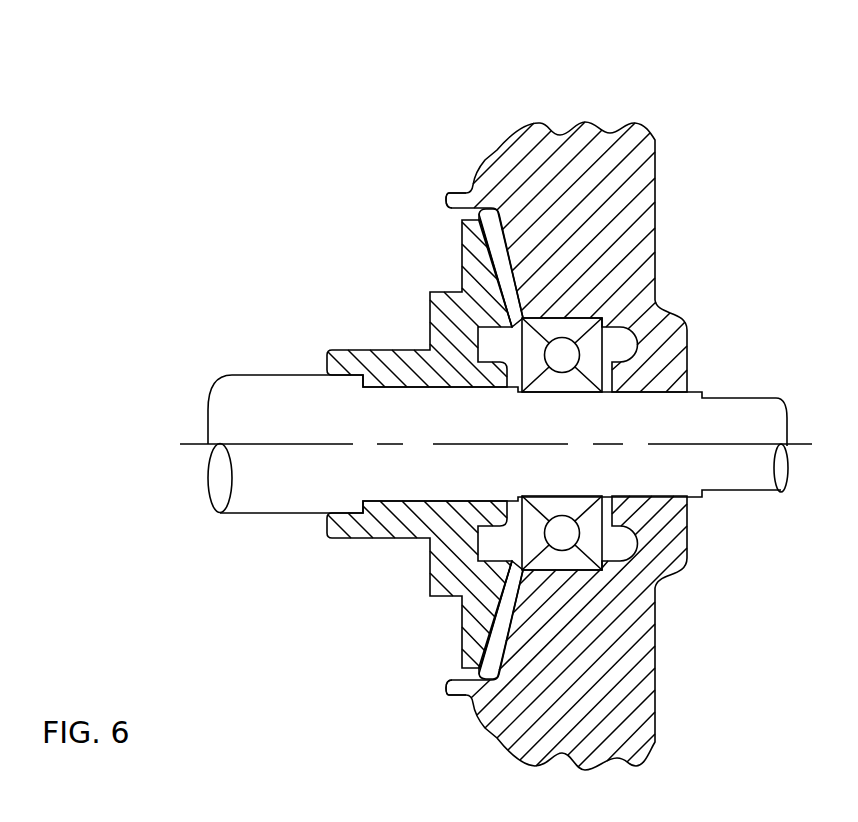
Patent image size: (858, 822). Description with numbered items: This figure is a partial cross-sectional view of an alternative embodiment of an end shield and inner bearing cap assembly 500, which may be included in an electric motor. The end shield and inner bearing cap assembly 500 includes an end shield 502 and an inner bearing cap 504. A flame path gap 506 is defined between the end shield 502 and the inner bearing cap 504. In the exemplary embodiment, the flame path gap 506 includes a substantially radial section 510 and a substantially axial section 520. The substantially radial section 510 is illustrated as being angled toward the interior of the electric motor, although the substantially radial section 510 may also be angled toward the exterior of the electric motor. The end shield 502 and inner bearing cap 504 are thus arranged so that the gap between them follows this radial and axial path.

The end shield and inner bearing cap assembly 500 is at (539, 58).
The end shield 502 is at (687, 347).
The inner bearing cap 504 is at (430, 318).
The flame path gap 506 is at (514, 244).
The substantially radial section 510 is at (517, 273).
The substantially axial section 520 is at (471, 181).